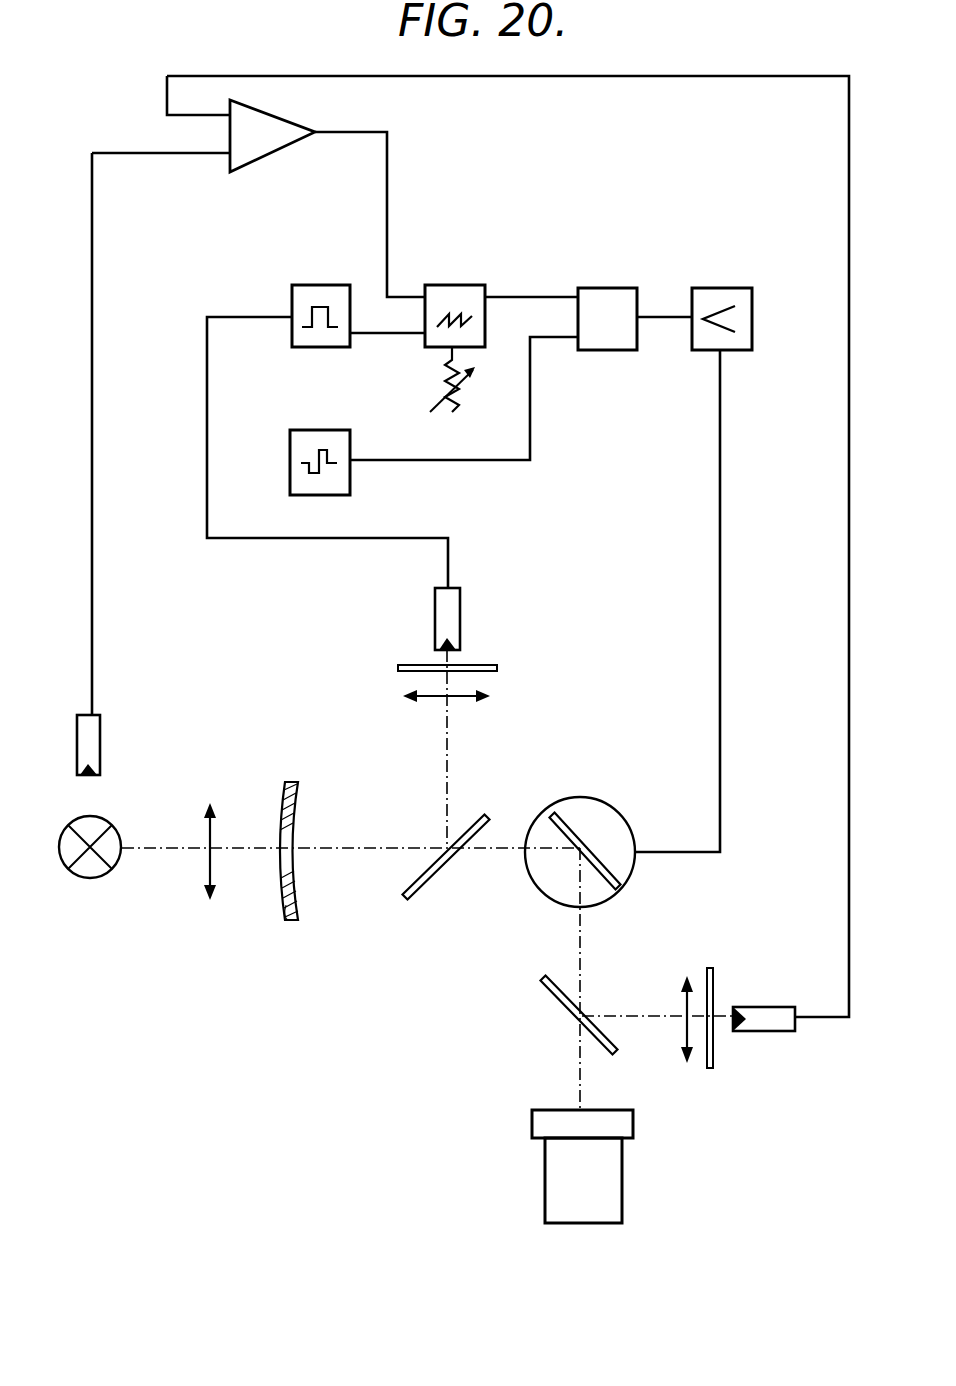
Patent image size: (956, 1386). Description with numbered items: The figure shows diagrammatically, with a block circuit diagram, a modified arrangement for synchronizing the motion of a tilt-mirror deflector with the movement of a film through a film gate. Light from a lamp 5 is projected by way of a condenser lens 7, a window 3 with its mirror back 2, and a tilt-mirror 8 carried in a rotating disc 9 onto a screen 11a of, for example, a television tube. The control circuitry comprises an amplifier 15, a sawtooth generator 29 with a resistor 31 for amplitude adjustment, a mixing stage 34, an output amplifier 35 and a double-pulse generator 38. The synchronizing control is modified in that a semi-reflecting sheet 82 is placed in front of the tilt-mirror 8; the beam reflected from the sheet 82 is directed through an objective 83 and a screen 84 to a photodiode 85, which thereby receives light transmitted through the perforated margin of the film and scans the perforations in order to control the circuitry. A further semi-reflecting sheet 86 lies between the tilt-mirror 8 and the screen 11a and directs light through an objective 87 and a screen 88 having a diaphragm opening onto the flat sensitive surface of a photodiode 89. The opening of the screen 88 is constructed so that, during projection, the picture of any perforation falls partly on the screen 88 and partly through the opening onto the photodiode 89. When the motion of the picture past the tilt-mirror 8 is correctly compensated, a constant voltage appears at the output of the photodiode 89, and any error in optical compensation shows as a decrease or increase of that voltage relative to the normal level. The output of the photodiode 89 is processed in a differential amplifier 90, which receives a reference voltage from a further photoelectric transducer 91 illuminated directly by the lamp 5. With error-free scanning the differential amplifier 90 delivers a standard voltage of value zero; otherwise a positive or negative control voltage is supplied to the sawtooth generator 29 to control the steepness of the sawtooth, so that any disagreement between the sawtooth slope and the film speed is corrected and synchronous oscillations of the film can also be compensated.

The mirror back 2 is at (285, 905).
The window 3 is at (292, 833).
The lamp 5 is at (112, 833).
The condenser lens 7 is at (212, 835).
The tilt-mirror 8 is at (560, 815).
The rotating disc 9 is at (628, 820).
The screen 11a is at (555, 1118).
The amplifier 15 is at (320, 286).
The sawtooth generator 29 is at (462, 296).
The resistor 31 is at (460, 398).
The mixing stage 34 is at (618, 296).
The output amplifier 35 is at (728, 296).
The double-pulse generator 38 is at (340, 430).
The semi-reflecting sheet 82 is at (470, 832).
The objective 83 is at (455, 698).
The screen 84 is at (478, 664).
The photodiode 85 is at (456, 608).
The semi-reflecting sheet 86 is at (600, 1036).
The objective 87 is at (684, 1002).
The screen 88 is at (713, 1042).
The photodiode 89 is at (778, 1030).
The differential amplifier 90 is at (285, 125).
The photoelectric transducer 91 is at (92, 733).